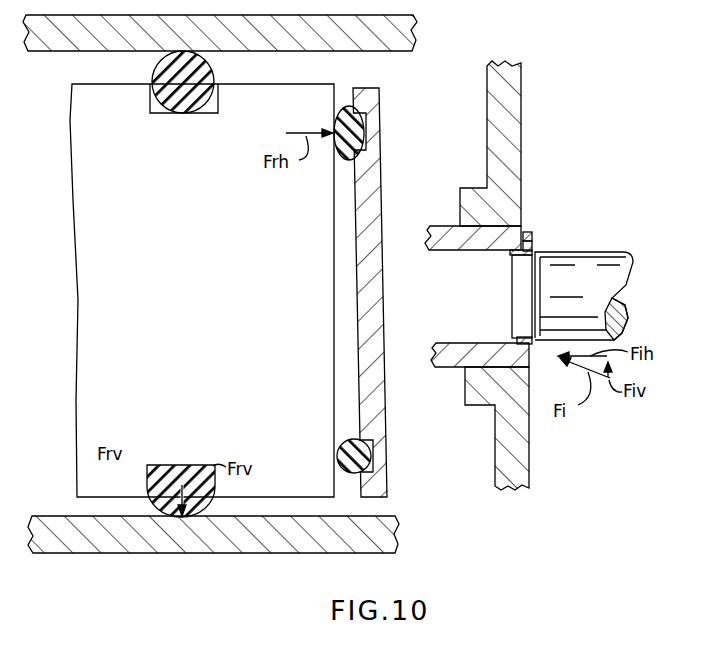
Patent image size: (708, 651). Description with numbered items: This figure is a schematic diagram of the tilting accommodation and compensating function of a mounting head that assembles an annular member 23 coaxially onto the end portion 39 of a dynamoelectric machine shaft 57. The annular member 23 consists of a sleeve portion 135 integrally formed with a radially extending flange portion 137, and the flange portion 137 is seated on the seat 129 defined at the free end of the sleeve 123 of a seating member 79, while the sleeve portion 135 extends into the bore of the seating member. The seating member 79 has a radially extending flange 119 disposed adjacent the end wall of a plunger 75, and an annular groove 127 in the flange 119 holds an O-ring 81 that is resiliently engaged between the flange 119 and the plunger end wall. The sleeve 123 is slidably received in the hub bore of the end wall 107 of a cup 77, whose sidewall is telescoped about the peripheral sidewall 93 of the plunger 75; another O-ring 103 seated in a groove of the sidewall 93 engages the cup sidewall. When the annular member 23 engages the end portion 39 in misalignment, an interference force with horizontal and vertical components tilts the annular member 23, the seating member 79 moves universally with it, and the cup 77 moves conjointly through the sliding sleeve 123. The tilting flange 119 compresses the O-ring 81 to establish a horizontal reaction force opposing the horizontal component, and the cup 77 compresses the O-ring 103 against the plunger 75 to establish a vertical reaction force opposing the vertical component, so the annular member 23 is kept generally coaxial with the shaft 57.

The plunger 75 is at (130, 259).
The seating member 79 is at (381, 197).
The flange 119 is at (374, 393).
The annular groove 127 is at (374, 467).
The O-ring 81 is at (355, 440).
The end wall 107 is at (521, 90).
The sleeve 123 is at (495, 232).
The seat 129 is at (525, 232).
The flange portion 137 is at (533, 244).
The sleeve portion 135 is at (515, 253).
The annular member 23 is at (503, 306).
The end portion 39 is at (627, 261).
The shaft 57 is at (625, 313).
The cup 77 is at (513, 488).
The peripheral sidewall 93 is at (280, 554).
The O-ring 103 is at (167, 518).